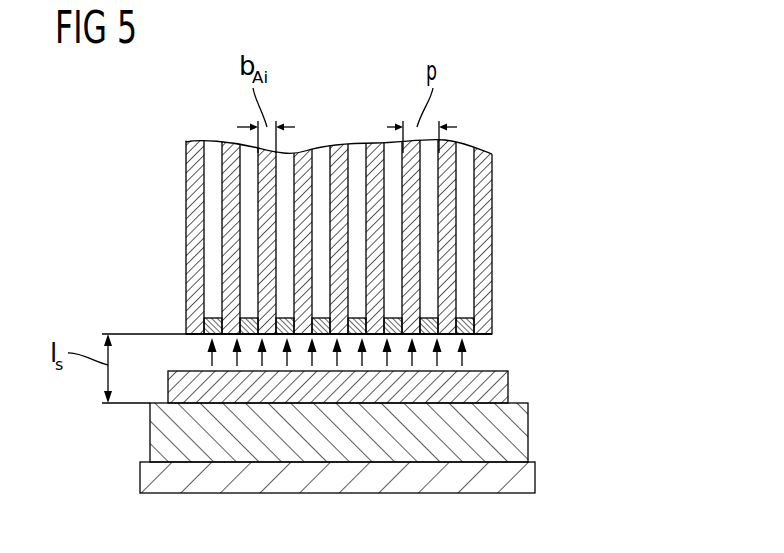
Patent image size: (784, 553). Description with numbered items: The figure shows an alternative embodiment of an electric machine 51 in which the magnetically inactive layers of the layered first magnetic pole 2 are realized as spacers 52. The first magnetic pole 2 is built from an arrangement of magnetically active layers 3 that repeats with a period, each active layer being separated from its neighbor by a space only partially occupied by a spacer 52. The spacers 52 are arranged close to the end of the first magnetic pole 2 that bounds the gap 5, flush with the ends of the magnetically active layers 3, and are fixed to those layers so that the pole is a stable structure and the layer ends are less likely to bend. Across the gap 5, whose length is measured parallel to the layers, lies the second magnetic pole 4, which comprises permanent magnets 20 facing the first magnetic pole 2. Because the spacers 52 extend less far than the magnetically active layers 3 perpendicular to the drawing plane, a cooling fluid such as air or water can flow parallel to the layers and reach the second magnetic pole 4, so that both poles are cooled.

The first magnetic pole 2 is at (376, 179).
The magnetically active layers 3 is at (492, 232).
The second magnetic pole 4 is at (557, 435).
The gap 5 is at (487, 353).
The permanent magnets 20 is at (498, 393).
The electric machine 51 is at (360, 99).
The spacers 52 is at (210, 318).